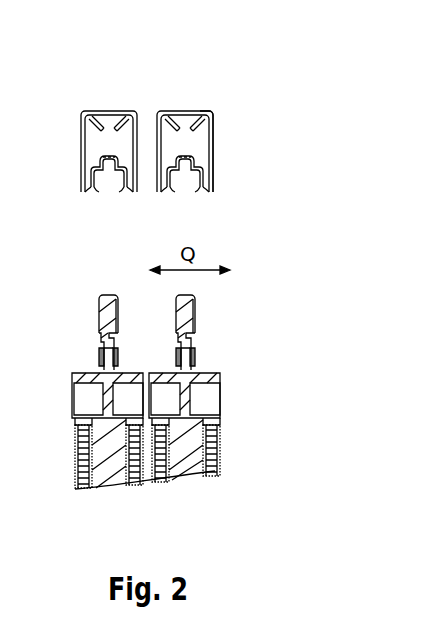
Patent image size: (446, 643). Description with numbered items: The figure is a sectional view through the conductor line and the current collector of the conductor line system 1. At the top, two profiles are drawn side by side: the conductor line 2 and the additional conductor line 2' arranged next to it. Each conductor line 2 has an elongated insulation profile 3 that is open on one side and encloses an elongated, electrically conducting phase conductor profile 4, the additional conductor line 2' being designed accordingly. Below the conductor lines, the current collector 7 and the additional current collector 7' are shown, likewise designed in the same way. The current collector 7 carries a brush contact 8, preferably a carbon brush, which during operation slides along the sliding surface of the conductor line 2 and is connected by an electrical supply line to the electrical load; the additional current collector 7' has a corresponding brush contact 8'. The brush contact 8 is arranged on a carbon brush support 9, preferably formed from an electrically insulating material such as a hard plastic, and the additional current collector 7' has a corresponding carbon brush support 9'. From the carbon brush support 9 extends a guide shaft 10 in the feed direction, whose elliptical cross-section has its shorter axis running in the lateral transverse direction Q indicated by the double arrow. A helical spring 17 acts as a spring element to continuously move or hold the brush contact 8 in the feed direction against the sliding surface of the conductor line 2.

The conductor line system 1 is at (159, 101).
The conductor line 2 is at (216, 113).
The additional conductor line 2' is at (125, 113).
The insulation profile 3 is at (213, 123).
The phase conductor profile 4 is at (207, 158).
The current collector 7 is at (214, 416).
The additional current collector 7' is at (76, 391).
The brush contact 8 is at (225, 332).
The brush contact of additional current collector 8' is at (64, 332).
The carbon brush support 9 is at (212, 395).
The carbon brush support of additional current collector 9' is at (76, 395).
The guide shaft 10 is at (188, 477).
The helical spring 17 is at (213, 475).